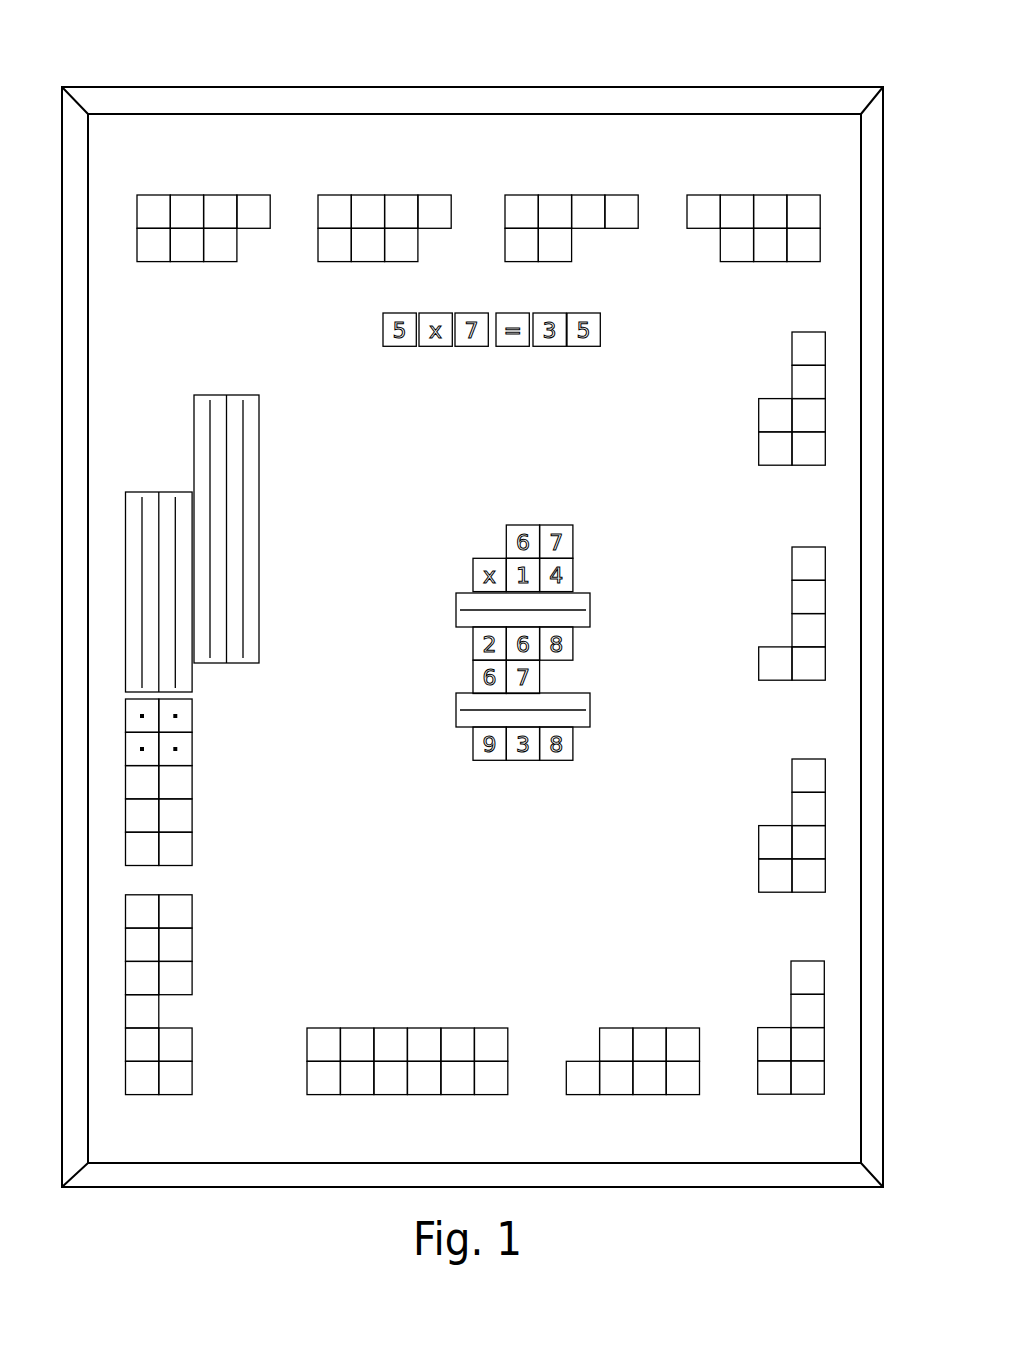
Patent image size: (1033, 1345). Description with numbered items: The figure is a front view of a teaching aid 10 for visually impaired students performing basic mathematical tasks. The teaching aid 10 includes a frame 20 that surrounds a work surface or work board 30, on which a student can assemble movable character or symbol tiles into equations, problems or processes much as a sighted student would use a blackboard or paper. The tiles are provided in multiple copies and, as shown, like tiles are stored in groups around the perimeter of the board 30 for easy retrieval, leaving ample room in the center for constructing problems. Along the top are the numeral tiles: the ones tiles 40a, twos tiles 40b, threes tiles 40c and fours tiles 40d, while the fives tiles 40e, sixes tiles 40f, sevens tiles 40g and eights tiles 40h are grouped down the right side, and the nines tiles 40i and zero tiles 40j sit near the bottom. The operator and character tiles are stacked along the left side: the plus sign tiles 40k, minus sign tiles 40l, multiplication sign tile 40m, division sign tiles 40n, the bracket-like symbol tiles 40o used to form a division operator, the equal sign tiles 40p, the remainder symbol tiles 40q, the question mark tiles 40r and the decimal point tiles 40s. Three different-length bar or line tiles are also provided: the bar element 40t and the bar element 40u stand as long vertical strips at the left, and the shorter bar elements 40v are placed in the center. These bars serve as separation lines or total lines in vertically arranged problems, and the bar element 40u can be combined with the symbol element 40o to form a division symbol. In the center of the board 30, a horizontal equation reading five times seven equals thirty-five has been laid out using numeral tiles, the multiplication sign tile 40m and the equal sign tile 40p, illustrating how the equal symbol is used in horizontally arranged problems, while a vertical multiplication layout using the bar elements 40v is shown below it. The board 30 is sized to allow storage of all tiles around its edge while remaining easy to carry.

The teaching aid 10 is at (225, 68).
The frame 20 is at (595, 103).
The work board 30 is at (650, 346).
The numeral 1 element 40a is at (251, 183).
The numeral 2 element 40b is at (415, 178).
The numeral 3 element 40c is at (602, 185).
The numeral 4 element 40d is at (747, 183).
The numeral 5 element 40e is at (750, 393).
The numeral 6 element 40f is at (772, 565).
The numeral 7 element 40g is at (772, 787).
The numeral 8 element 40h is at (762, 967).
The numeral 9 element 40i is at (612, 1010).
The numeral 0 element 40j is at (422, 1022).
The plus sign element 40k is at (193, 1082).
The minus sign element 40l is at (193, 1042).
The multiplication sign element 40m is at (160, 1016).
The division sign element 40n is at (196, 978).
The division operator symbol element 40o is at (195, 942).
The equal sign element 40p is at (193, 908).
The remainder symbol element 40q is at (195, 853).
The question mark element 40r is at (195, 784).
The decimal point element 40s is at (194, 718).
The bar element 40t is at (278, 463).
The bar element 40u is at (163, 467).
The bar element 40v is at (598, 612).